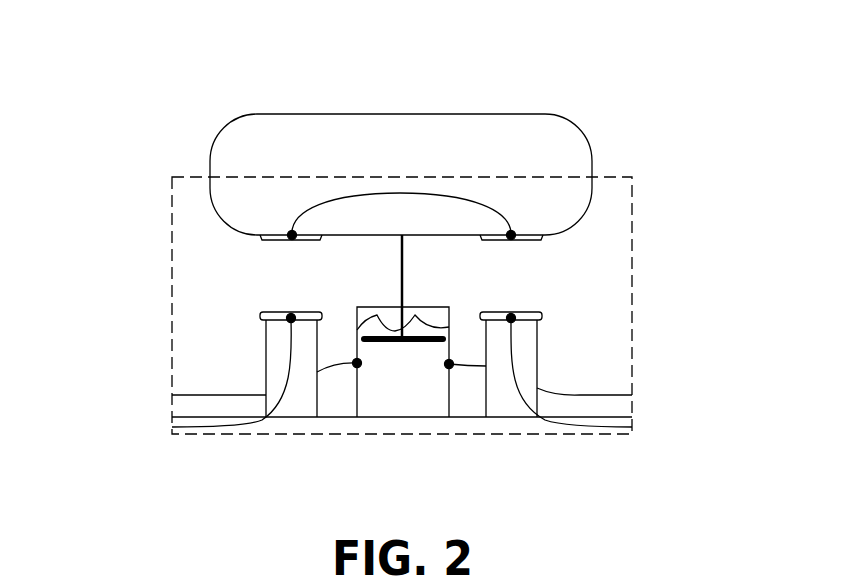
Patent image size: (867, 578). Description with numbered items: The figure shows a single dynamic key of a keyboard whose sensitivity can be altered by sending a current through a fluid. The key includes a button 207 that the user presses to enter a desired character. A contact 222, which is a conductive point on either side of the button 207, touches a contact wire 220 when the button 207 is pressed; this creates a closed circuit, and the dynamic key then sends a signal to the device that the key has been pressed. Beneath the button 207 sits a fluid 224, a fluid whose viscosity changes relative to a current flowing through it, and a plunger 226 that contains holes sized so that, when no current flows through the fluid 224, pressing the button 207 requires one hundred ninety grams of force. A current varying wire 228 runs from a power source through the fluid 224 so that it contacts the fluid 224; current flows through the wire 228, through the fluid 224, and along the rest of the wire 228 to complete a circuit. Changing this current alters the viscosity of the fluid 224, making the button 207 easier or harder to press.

The button 207 is at (257, 115).
The contact 222 is at (533, 240).
The contact wire 220 is at (603, 427).
The current varying wire 228 is at (197, 395).
The fluid 224 is at (422, 408).
The plunger 226 is at (373, 337).